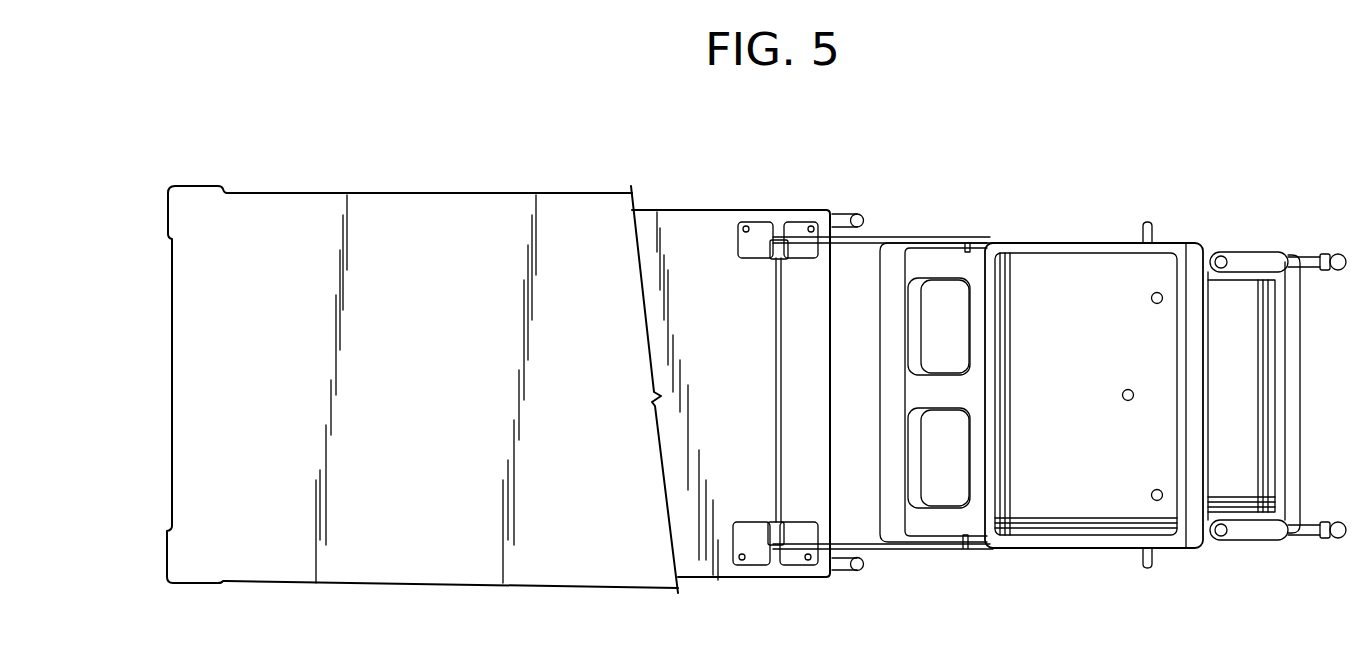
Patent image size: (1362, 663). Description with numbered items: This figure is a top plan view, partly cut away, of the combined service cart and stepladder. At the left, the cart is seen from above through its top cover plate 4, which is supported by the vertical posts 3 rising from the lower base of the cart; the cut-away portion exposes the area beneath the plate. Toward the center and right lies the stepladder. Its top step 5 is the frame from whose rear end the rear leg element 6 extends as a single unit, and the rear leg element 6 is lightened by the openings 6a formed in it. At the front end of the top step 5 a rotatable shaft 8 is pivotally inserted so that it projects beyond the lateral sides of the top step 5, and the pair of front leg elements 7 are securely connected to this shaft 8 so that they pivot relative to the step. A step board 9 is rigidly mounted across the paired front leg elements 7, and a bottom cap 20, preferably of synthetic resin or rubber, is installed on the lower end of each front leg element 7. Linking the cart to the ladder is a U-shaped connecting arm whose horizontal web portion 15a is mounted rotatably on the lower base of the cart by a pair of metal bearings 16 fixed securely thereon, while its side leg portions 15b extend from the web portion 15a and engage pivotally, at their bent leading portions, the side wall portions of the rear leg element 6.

The post 3 is at (864, 216).
The top cover plate 4 is at (460, 212).
The top step 5 is at (1075, 542).
The rear leg element 6 is at (948, 545).
The opening 6a is at (948, 282).
The front leg element 7 is at (701, 560).
The rotatable shaft 8 is at (1154, 226).
The step board 9 is at (1245, 375).
The horizontal web portion 15a is at (777, 394).
The side leg portion 15b is at (882, 548).
The metal bearing 16 is at (768, 250).
The bottom cap 20 is at (1331, 254).